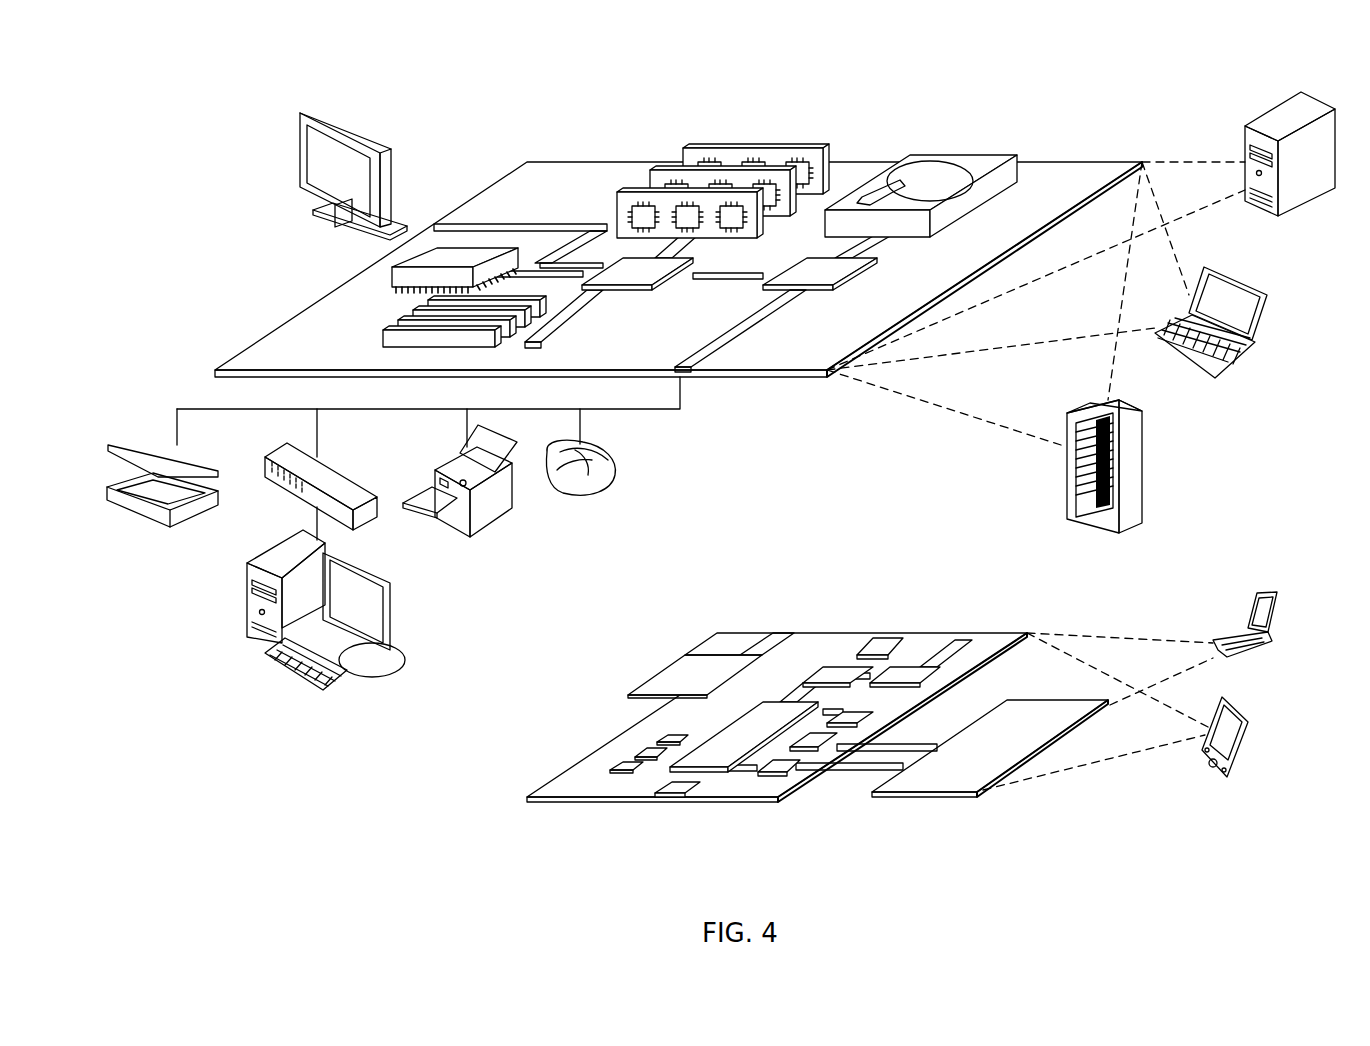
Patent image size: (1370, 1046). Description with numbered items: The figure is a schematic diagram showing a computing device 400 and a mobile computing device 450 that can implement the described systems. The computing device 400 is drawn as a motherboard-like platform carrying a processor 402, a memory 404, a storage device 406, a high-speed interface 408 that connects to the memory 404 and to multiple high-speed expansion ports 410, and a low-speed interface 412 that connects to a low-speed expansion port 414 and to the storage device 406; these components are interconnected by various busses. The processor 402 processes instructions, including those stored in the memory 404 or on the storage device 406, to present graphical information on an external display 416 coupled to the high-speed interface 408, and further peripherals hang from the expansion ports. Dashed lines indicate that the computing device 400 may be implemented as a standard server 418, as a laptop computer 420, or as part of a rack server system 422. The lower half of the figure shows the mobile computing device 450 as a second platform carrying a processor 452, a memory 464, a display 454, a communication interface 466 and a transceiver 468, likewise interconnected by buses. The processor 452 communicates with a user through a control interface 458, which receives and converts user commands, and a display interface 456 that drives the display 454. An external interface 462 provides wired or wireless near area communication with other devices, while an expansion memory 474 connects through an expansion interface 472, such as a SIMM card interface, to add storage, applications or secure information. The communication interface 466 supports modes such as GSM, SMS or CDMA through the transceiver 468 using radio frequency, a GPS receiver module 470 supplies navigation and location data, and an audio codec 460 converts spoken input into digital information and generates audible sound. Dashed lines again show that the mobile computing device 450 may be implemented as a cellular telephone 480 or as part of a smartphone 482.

The computing device 400 is at (507, 118).
The processor 402 is at (392, 269).
The memory 404 is at (757, 148).
The storage device 406 is at (965, 155).
The high-speed interface 408 is at (630, 291).
The high-speed expansion ports 410 is at (383, 337).
The low-speed interface 412 is at (853, 289).
The low-speed expansion port 414 is at (740, 340).
The display 416 is at (300, 114).
The standard server 418 is at (1248, 124).
The laptop computer 420 is at (1267, 295).
The rack server system 422 is at (1142, 468).
The mobile computing device 450 is at (731, 566).
The processor 452 is at (712, 718).
The display 454 is at (927, 797).
The display interface 456 is at (772, 776).
The control interface 458 is at (812, 751).
The audio codec 460 is at (845, 727).
The external interface 462 is at (672, 797).
The memory 464 is at (610, 766).
The communication interface 466 is at (830, 667).
The transceiver 468 is at (912, 667).
The GPS receiver module 470 is at (880, 638).
The expansion interface 472 is at (747, 652).
The expansion memory 474 is at (663, 668).
The cellular telephone 480 is at (1279, 594).
The smartphone 482 is at (1240, 715).